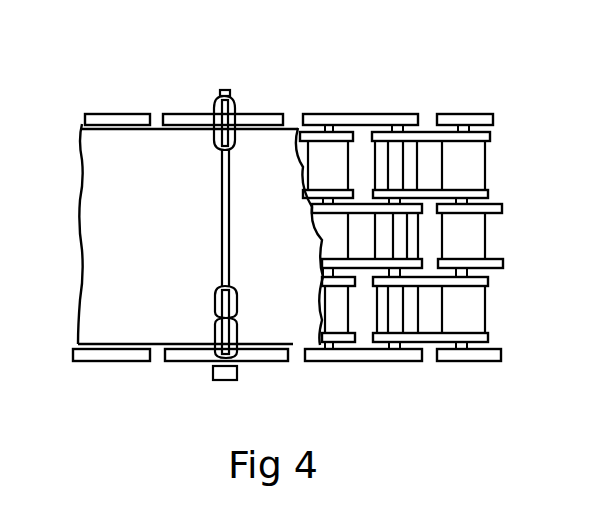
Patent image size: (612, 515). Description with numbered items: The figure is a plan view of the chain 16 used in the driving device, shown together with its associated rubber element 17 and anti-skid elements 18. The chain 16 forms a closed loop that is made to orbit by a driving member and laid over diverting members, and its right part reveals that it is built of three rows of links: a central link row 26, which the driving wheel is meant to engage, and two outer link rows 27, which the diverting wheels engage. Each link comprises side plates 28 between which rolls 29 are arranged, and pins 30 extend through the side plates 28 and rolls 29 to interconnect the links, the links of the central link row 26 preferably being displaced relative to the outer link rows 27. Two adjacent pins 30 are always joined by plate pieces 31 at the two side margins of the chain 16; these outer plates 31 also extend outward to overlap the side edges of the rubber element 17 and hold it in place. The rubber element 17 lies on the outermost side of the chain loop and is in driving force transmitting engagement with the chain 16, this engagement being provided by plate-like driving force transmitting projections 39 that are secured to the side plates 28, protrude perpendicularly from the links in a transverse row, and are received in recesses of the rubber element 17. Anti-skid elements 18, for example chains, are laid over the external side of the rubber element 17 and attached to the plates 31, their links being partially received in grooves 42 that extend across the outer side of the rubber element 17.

The chain 16 is at (507, 88).
The rubber element 17 is at (105, 163).
The anti-skid elements 18 is at (218, 333).
The central link row 26 is at (512, 233).
The outer link rows 27 is at (505, 166).
The side plates 28 is at (492, 282).
The rolls 29 is at (490, 157).
The pins 30 is at (392, 122).
The plate pieces 31 is at (463, 118).
The driving force transmitting projections 39 is at (390, 164).
The grooves 42 is at (222, 247).